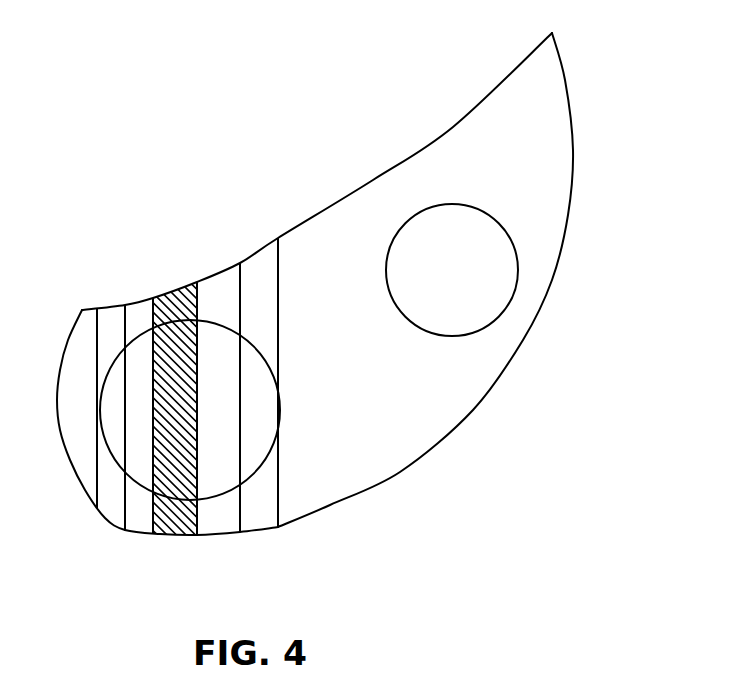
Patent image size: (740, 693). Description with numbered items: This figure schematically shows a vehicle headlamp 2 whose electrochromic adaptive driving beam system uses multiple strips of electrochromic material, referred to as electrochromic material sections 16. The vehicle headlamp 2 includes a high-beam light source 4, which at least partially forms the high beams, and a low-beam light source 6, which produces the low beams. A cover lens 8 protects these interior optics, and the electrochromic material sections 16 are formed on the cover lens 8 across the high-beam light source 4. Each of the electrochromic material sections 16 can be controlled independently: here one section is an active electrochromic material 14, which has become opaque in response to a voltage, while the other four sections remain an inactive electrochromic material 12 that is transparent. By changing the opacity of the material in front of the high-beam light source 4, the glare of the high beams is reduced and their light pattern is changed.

The vehicle headlamp 2 is at (347, 326).
The high-beam light source 4 is at (107, 519).
The low-beam light source 6 is at (518, 243).
The cover lens 8 is at (573, 157).
The inactive electrochromic material 12 is at (113, 320).
The active electrochromic material 14 is at (173, 287).
The electrochromic material sections 16 is at (223, 567).